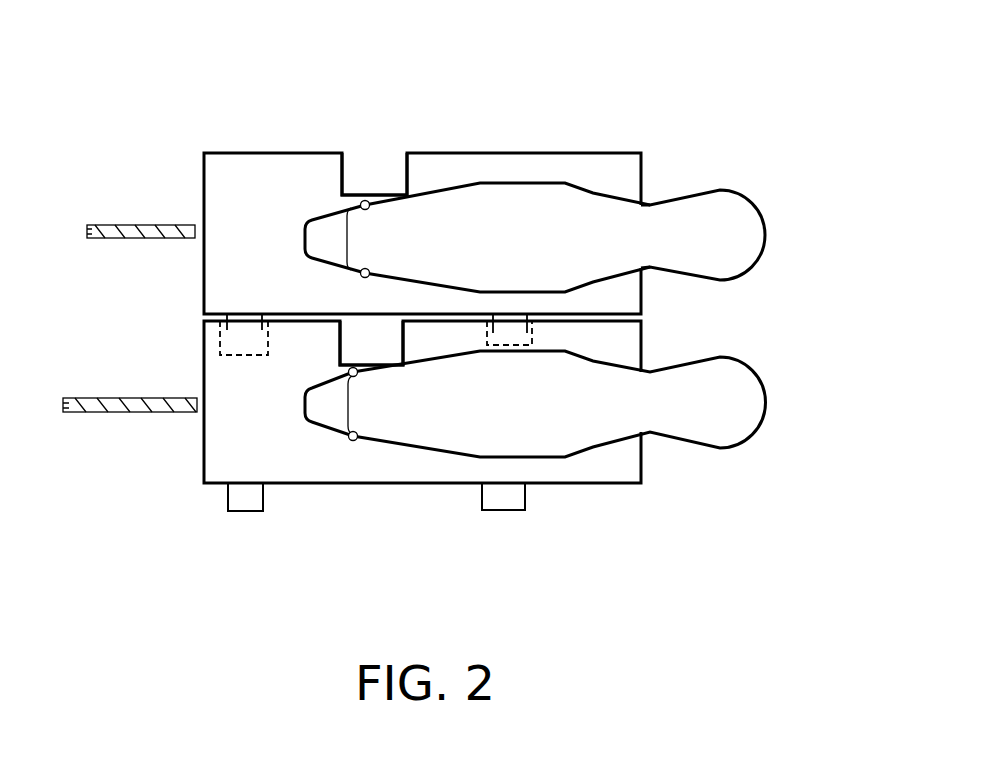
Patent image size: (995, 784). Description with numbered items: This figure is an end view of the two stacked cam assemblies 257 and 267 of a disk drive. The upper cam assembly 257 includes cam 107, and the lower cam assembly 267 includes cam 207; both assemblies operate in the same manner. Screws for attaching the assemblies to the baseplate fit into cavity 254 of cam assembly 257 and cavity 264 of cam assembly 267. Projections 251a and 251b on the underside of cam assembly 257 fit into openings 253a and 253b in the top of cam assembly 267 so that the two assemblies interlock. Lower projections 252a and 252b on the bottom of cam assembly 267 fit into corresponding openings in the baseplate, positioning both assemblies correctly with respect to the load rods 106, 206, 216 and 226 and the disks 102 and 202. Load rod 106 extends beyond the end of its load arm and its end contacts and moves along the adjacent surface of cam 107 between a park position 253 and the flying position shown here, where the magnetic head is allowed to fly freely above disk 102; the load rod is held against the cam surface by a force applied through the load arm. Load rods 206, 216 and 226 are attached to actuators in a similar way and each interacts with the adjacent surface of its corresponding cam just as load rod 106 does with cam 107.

The disk 102 is at (118, 226).
The load rod 106 is at (359, 203).
The cam 107 is at (740, 237).
The disk 202 is at (98, 398).
The load rod 206 is at (360, 272).
The cam 207 is at (745, 403).
The load rod 216 is at (348, 374).
The load rod 226 is at (405, 345).
The projection 251a is at (243, 337).
The projection 251b is at (503, 332).
The lower projection 252a is at (245, 500).
The lower projection 252b is at (508, 494).
The park position 253 is at (653, 207).
The opening 253a is at (220, 339).
The opening 253b is at (532, 338).
The cavity 254 is at (401, 191).
The cam assembly 257 is at (485, 95).
The cavity 264 is at (354, 442).
The cam assembly 267 is at (630, 510).